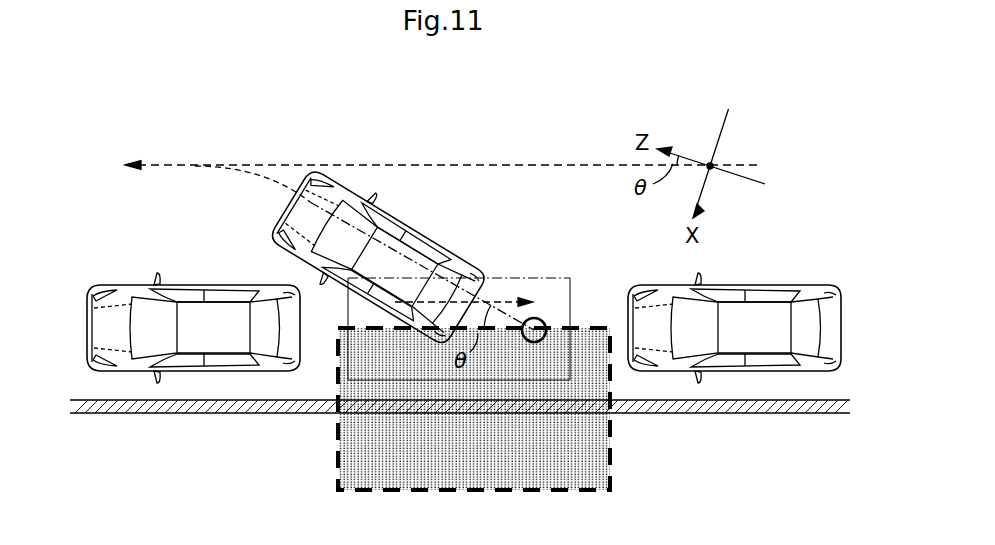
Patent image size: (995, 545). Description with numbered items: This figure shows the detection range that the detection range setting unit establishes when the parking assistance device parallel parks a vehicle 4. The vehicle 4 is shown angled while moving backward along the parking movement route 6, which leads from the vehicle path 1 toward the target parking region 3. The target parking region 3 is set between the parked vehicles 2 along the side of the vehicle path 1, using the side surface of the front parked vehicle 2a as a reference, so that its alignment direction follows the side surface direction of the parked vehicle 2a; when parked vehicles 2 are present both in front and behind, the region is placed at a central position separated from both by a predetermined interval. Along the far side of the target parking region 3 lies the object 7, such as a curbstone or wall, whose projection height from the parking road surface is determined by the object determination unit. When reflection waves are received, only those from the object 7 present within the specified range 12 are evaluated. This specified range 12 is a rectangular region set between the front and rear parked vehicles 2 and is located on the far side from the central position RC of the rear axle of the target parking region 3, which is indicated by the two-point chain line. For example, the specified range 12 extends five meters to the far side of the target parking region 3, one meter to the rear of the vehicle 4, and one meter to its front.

The vehicle path 1 is at (486, 150).
The parked vehicles 2 is at (752, 290).
The front parked vehicle 2a is at (88, 292).
The target parking region 3 is at (571, 292).
The vehicle 4 is at (460, 257).
The parking movement route 6 is at (263, 182).
The object 7 is at (225, 414).
The specified range 12 is at (612, 457).
The central position of the rear axle RC is at (542, 319).